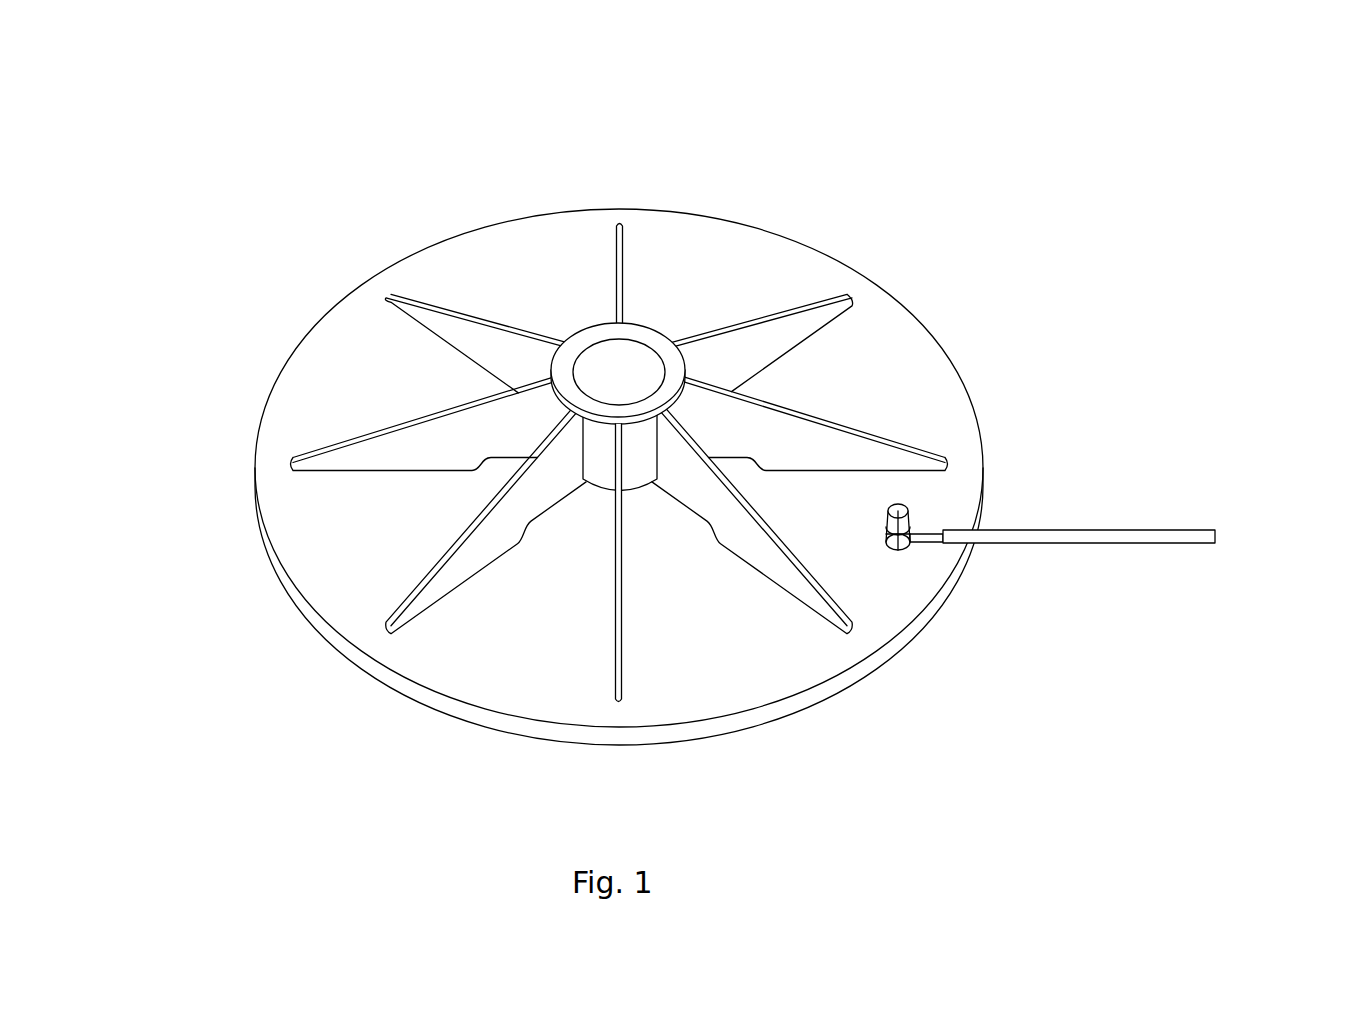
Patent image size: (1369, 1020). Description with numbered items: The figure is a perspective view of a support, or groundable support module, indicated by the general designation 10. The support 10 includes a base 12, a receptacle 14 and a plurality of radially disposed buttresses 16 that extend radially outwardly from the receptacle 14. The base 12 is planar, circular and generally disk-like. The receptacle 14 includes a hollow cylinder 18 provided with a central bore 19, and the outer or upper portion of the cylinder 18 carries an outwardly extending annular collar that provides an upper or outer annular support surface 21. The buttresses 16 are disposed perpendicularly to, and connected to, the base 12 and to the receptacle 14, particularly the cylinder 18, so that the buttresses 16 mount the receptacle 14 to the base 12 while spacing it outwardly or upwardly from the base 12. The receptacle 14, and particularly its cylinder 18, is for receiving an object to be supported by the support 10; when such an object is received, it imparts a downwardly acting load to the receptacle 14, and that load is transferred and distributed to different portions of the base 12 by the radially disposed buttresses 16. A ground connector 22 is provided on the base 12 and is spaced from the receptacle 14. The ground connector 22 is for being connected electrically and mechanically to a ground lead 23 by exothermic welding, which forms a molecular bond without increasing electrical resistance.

The support 10 is at (741, 420).
The base 12 is at (480, 273).
The receptacle 14 is at (596, 458).
The buttresses 16 is at (606, 420).
The hollow cylinder 18 is at (647, 432).
The central bore 19 is at (630, 368).
The annular support surface 21 is at (673, 378).
The ground connector 22 is at (914, 510).
The ground lead 23 is at (1173, 533).